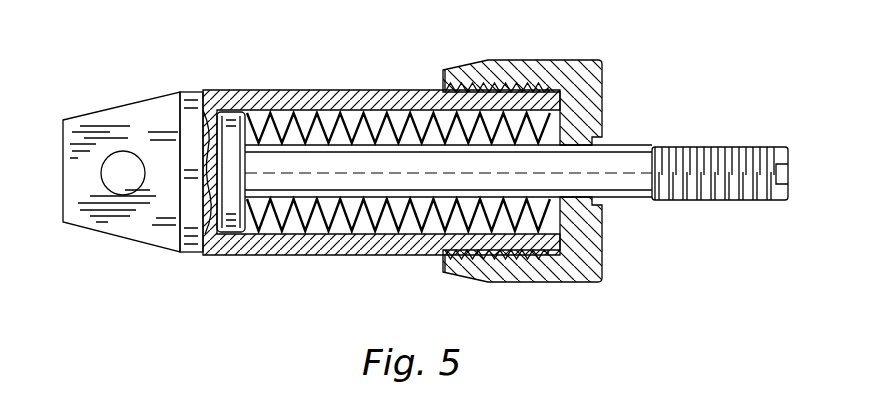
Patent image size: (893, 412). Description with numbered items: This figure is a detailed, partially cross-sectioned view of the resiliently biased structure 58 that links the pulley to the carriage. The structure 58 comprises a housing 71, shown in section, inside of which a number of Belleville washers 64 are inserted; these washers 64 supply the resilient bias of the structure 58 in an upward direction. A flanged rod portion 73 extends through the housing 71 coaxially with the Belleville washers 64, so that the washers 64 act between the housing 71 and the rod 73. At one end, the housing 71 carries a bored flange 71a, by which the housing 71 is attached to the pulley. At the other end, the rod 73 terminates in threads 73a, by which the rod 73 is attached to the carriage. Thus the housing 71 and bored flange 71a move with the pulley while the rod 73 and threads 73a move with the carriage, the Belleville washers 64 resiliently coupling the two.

The structure 58 is at (329, 78).
The Belleville washers 64 is at (362, 208).
The housing 71 is at (276, 90).
The bored flange 71a is at (133, 103).
The flanged rod portion 73 is at (516, 120).
The threads 73a is at (706, 148).